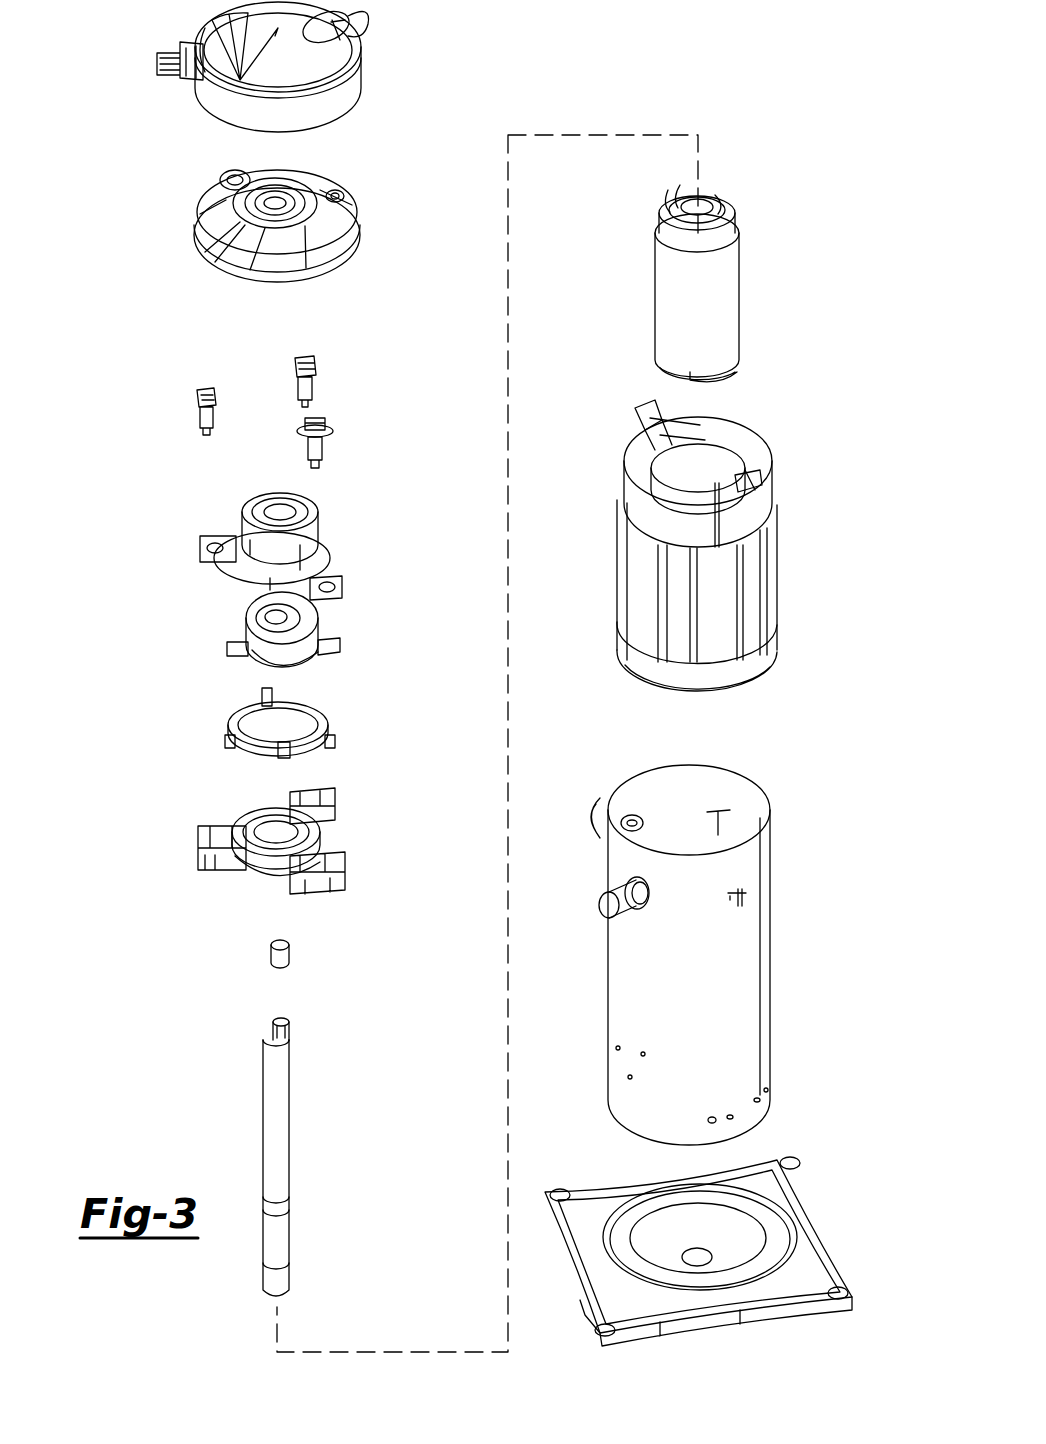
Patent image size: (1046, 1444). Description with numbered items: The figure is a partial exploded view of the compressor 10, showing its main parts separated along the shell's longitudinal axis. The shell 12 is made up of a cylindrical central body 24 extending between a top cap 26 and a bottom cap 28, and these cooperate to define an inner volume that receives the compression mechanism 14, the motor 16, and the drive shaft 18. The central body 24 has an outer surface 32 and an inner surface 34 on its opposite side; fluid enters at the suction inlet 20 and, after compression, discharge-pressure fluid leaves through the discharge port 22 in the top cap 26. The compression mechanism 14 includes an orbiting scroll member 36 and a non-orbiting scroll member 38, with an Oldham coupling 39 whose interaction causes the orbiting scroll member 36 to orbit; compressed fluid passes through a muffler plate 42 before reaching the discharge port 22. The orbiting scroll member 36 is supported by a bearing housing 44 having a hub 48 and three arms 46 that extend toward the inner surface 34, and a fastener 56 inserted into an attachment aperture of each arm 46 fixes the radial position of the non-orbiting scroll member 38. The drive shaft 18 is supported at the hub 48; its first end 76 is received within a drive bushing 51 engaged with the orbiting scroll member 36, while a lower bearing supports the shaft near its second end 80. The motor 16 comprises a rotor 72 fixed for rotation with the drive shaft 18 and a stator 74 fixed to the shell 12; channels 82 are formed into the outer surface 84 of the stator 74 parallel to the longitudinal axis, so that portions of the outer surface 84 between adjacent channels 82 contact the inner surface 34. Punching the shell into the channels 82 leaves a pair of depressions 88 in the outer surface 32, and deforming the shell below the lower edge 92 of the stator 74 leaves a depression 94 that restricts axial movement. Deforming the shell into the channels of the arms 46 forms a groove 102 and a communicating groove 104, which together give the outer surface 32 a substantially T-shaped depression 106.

The compressor 10 is at (110, 90).
The shell 12 is at (701, 932).
The compression mechanism 14 is at (145, 293).
The motor 16 is at (808, 181).
The drive shaft 18 is at (269, 1129).
The suction inlet 20 is at (600, 905).
The discharge port 22 is at (158, 62).
The central body 24 is at (740, 1068).
The top cap 26 is at (252, 67).
The bottom cap 28 is at (770, 1220).
The outer surface 32 is at (632, 990).
The inner surface 34 is at (690, 792).
The orbiting scroll member 36 is at (310, 630).
The non-orbiting scroll member 38 is at (228, 558).
The Oldham coupling 39 is at (330, 722).
The muffler plate 42 is at (285, 190).
The bearing housing 44 is at (272, 840).
The arms 46 is at (200, 856).
The hub 48 is at (258, 872).
The drive bushing 51 is at (292, 957).
The fastener 56 is at (205, 393).
The rotor 72 is at (660, 305).
The stator 74 is at (728, 567).
The first end 76 is at (259, 999).
The second end 80 is at (292, 1300).
The channels 82 is at (740, 612).
The outer surface 84 is at (634, 600).
The depressions 88 is at (616, 1048).
The lower edge 92 is at (665, 665).
The depression 94 is at (628, 1080).
The groove 102 is at (748, 888).
The groove 104 is at (742, 905).
The T-shaped depression 106 is at (735, 888).